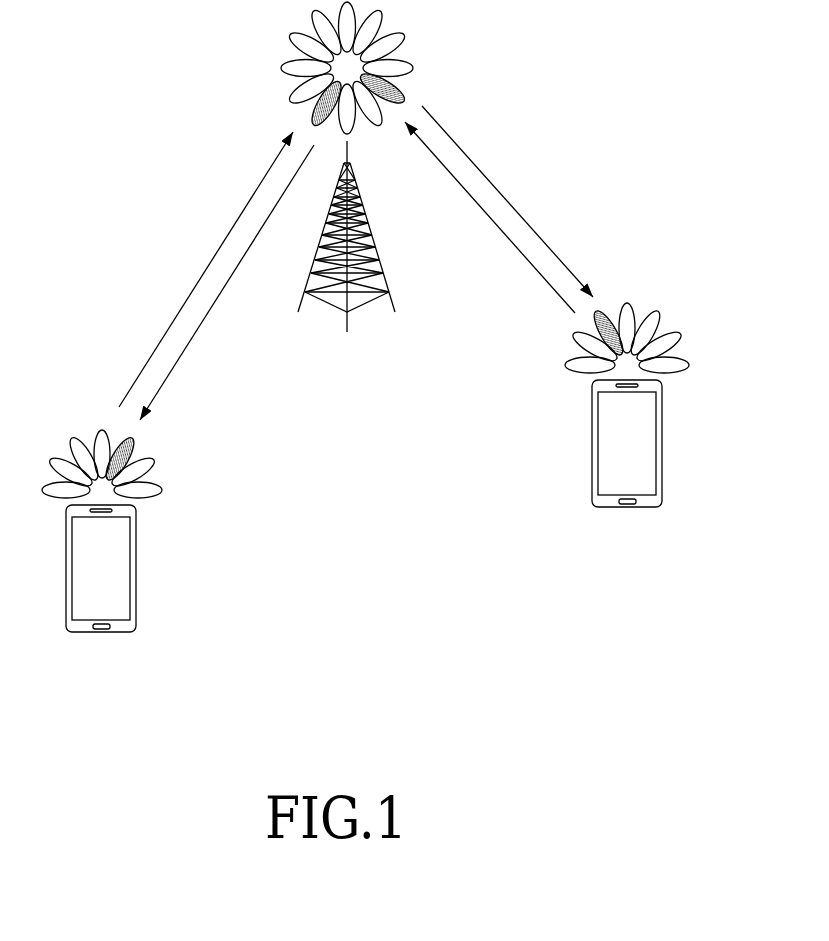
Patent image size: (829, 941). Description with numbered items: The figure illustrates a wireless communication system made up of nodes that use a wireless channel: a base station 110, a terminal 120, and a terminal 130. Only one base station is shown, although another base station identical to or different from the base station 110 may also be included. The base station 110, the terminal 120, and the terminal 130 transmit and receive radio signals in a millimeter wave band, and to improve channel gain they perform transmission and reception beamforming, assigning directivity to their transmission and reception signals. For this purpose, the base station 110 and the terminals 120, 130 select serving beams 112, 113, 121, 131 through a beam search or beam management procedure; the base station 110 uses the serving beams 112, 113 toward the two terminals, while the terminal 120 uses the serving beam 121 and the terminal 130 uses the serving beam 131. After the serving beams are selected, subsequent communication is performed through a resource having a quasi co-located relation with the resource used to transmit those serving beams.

The base station 110 is at (365, 226).
The serving beam 112 is at (312, 121).
The serving beam 113 is at (404, 98).
The terminal 120 is at (136, 540).
The serving beam 121 is at (133, 438).
The terminal 130 is at (662, 412).
The serving beam 131 is at (594, 316).